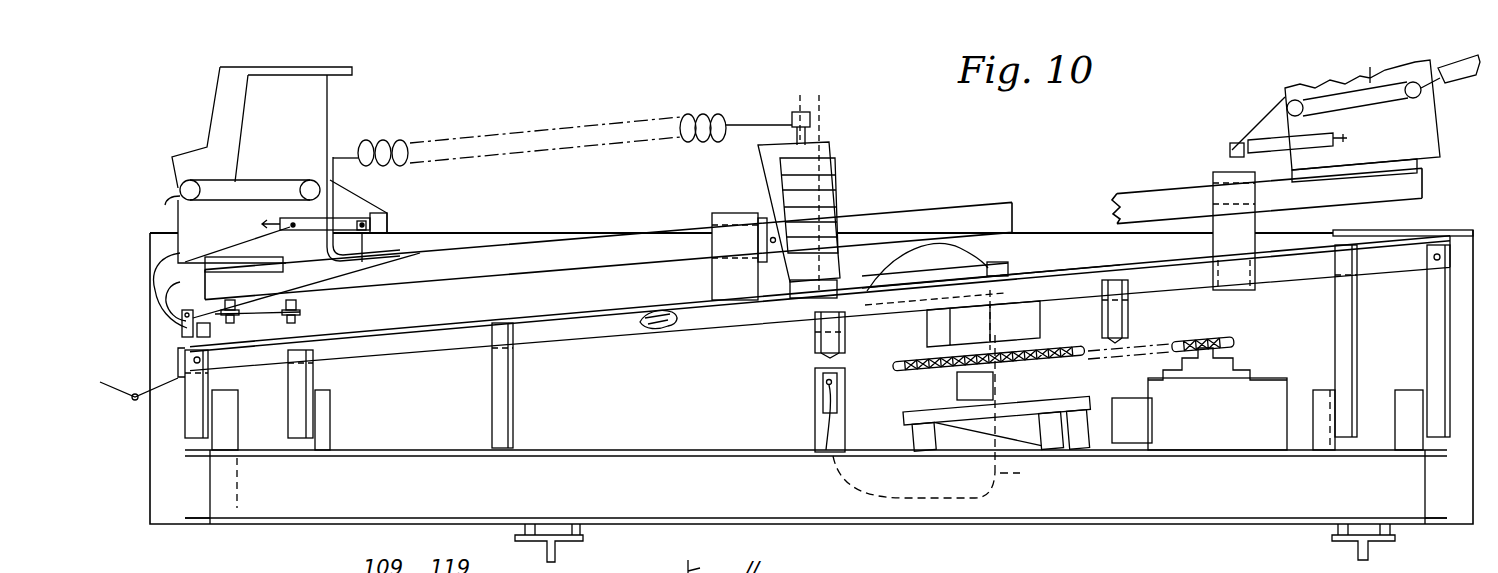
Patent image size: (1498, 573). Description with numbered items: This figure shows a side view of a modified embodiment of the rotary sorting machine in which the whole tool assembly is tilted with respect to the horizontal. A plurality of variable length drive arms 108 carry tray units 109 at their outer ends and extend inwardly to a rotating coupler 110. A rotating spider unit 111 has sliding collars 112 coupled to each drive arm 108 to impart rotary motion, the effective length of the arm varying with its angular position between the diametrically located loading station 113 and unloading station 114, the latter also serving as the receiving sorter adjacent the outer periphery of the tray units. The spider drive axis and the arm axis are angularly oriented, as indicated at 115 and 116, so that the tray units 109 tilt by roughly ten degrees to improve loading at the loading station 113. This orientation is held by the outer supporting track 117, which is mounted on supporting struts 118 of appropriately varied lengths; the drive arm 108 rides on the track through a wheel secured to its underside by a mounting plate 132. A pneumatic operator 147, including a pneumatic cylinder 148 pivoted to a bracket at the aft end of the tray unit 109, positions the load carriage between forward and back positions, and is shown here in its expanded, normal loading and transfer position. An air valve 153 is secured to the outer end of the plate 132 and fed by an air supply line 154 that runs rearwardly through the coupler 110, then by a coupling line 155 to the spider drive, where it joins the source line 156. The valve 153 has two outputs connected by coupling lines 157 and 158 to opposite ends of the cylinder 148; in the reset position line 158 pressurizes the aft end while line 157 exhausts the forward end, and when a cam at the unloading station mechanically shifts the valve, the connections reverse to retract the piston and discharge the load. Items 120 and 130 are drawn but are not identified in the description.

The variable length drive arm 108 is at (624, 248).
The tray unit 109 is at (332, 112).
The rotating coupler 110 is at (833, 202).
The rotating spider unit 111 is at (1060, 300).
The sliding collar 112 is at (737, 212).
The loading station 113 is at (1455, 78).
The unloading station 114 is at (136, 400).
The spider drive axis orientation 115 is at (833, 159).
The arm axis orientation 116 is at (957, 380).
The outer supporting track 117 is at (412, 347).
The supporting strut 118 is at (513, 378).
The belt conveyor 120 is at (305, 149).
The spring clip 130 is at (660, 328).
The mounting plate 132 is at (300, 322).
The pneumatic operator 147 is at (355, 213).
The pneumatic cylinder 148 is at (363, 232).
The air valve 153 is at (182, 337).
The air supply line 154 is at (152, 326).
The coupling line 155 is at (948, 244).
The source line 156 is at (845, 425).
The coupling line 157 is at (236, 246).
The coupling line 158 is at (358, 262).